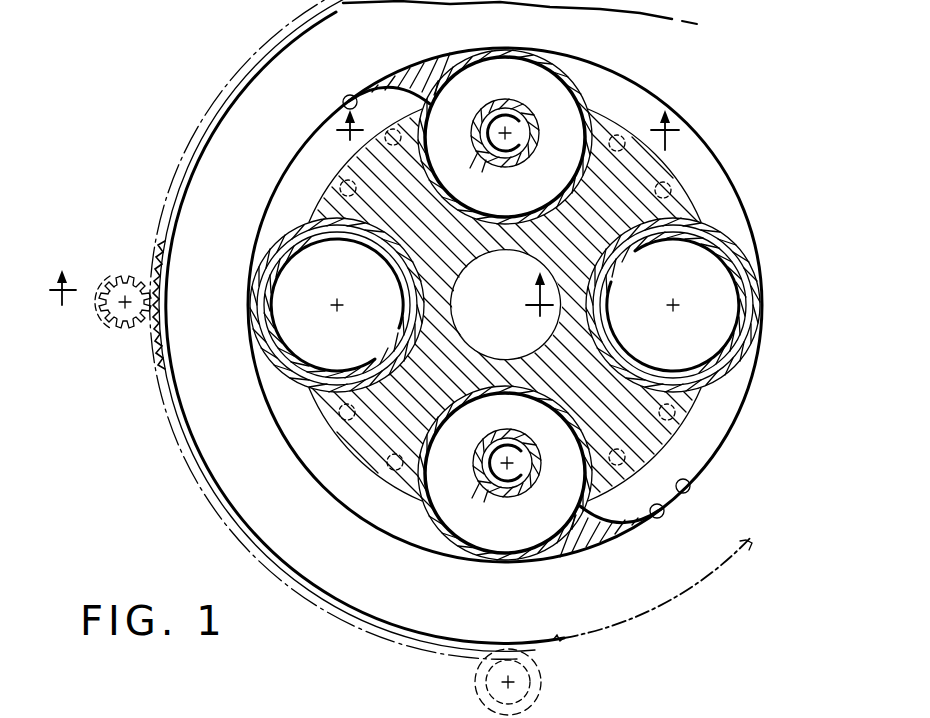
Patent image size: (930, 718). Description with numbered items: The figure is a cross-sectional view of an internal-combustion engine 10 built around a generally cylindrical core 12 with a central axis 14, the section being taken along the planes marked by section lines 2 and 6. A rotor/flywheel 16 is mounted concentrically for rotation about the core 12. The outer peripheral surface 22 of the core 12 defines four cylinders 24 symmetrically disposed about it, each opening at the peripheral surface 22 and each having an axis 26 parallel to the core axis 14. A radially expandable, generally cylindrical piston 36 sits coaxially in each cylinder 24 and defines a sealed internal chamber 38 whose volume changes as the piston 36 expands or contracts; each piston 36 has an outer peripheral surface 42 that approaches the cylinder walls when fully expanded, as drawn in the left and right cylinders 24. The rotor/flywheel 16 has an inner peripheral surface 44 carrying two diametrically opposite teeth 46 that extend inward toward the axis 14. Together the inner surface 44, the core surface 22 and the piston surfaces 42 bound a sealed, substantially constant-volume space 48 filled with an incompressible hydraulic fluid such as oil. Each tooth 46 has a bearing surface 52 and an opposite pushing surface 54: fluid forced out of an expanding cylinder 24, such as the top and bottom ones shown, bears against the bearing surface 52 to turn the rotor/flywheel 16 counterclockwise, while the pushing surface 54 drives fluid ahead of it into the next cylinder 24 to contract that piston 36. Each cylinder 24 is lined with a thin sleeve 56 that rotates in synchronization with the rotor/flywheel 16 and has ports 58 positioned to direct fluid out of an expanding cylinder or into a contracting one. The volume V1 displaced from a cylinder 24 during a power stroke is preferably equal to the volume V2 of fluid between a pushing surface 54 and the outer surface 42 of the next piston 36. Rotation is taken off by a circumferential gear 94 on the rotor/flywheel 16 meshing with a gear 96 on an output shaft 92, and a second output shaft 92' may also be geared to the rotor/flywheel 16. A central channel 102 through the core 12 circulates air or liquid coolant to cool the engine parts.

The internal-combustion engine 10 is at (155, 489).
The core 12 is at (710, 463).
The central axis 14 is at (512, 303).
The rotor/flywheel 16 is at (207, 167).
The outer peripheral surface 22 is at (347, 451).
The cylinder 24 is at (547, 86).
The axis 26 is at (513, 155).
The piston 36 is at (474, 155).
The internal chamber 38 is at (519, 131).
The outer peripheral surface 42 is at (472, 136).
The inner peripheral surface 44 is at (688, 489).
The tooth 46 is at (407, 72).
The space 48 is at (625, 98).
The bearing surface 52 is at (457, 79).
The pushing surface 54 is at (343, 107).
The sleeve 56 is at (528, 50).
The port 58 is at (484, 48).
The output shaft 92 is at (110, 326).
The second output shaft 92' is at (534, 682).
The circumferential gear 94 is at (153, 350).
The gear 96 is at (120, 277).
The central channel 102 is at (530, 355).
The volume V1 is at (443, 515).
The volume V2 is at (717, 426).
The section line 2- 2 is at (301, 300).
The section line 6- 6 is at (508, 135).